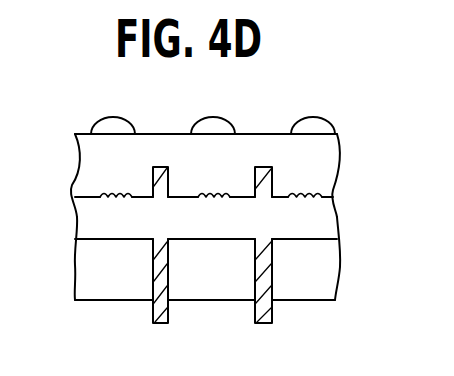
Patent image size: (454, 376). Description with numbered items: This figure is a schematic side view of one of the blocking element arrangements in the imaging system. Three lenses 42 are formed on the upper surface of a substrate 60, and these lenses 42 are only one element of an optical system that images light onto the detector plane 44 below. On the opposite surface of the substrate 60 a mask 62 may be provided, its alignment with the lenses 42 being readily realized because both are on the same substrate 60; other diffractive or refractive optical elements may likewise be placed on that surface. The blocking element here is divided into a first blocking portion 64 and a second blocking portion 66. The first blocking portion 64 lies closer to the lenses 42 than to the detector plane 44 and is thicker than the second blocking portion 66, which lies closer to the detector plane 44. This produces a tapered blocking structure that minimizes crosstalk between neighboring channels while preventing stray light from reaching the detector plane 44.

The lenses 42 is at (310, 126).
The detector plane 44 is at (325, 302).
The substrate 60 is at (325, 167).
The mask 62 is at (313, 195).
The first blocking portion 64 is at (157, 194).
The second blocking portion 66 is at (152, 290).